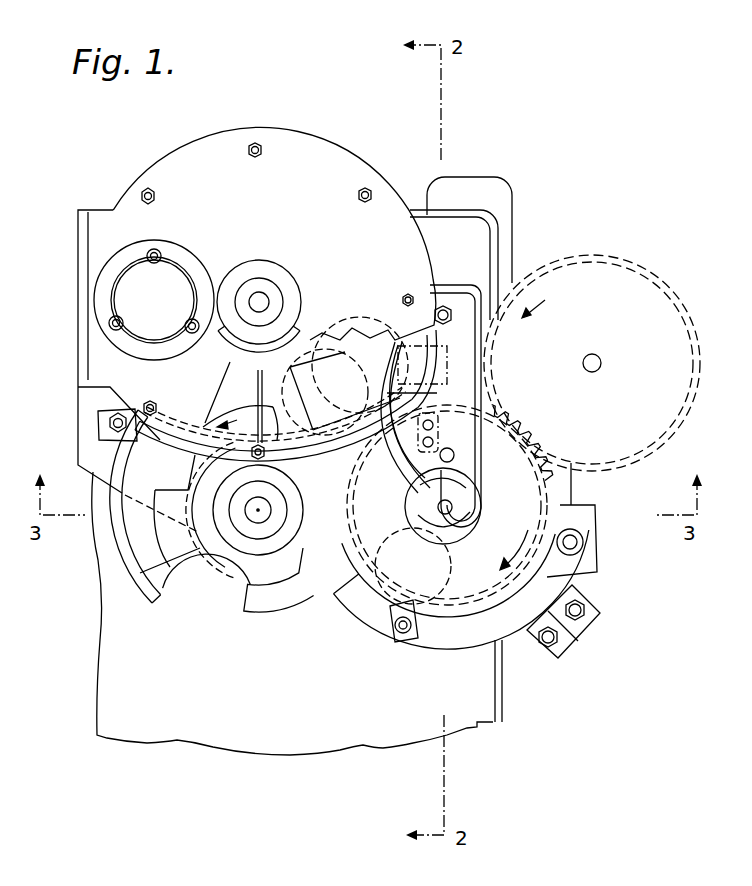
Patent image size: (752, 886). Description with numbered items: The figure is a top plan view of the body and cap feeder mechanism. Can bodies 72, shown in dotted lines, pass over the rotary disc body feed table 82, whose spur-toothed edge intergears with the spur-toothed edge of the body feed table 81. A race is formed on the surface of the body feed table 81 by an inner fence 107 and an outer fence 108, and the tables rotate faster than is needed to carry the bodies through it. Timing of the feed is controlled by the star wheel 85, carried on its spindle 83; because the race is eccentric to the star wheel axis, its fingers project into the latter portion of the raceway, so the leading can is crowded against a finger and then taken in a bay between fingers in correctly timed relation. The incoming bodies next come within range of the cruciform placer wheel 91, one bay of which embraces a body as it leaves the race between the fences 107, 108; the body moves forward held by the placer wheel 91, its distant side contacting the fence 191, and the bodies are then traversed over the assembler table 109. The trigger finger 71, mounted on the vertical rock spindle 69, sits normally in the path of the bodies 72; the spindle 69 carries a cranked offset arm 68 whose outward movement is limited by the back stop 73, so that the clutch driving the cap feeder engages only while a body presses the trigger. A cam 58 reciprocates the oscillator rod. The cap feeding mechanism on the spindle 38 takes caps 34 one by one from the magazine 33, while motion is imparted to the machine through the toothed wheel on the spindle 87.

The magazine 33 is at (118, 313).
The spindle 38 is at (263, 304).
The cam 58 is at (370, 334).
The inner fence 107 is at (486, 352).
The caps 34 is at (258, 402).
The vertical rock spindle 69 is at (345, 376).
The cranked offset arm 68 is at (437, 393).
The back stop 73 is at (436, 434).
The rotary disc body feed table 82 is at (535, 450).
The assembler table 109 is at (272, 455).
The trigger finger 71 is at (388, 458).
The fence 191 is at (403, 460).
The star wheel 85 is at (452, 490).
The body feed table 81 is at (537, 480).
The spindle 87 is at (262, 510).
The spindle of the star wheel 83 is at (460, 510).
The can bodies 72 is at (390, 550).
The cruciform placer wheel 91 is at (227, 527).
The outer fence 108 is at (533, 575).